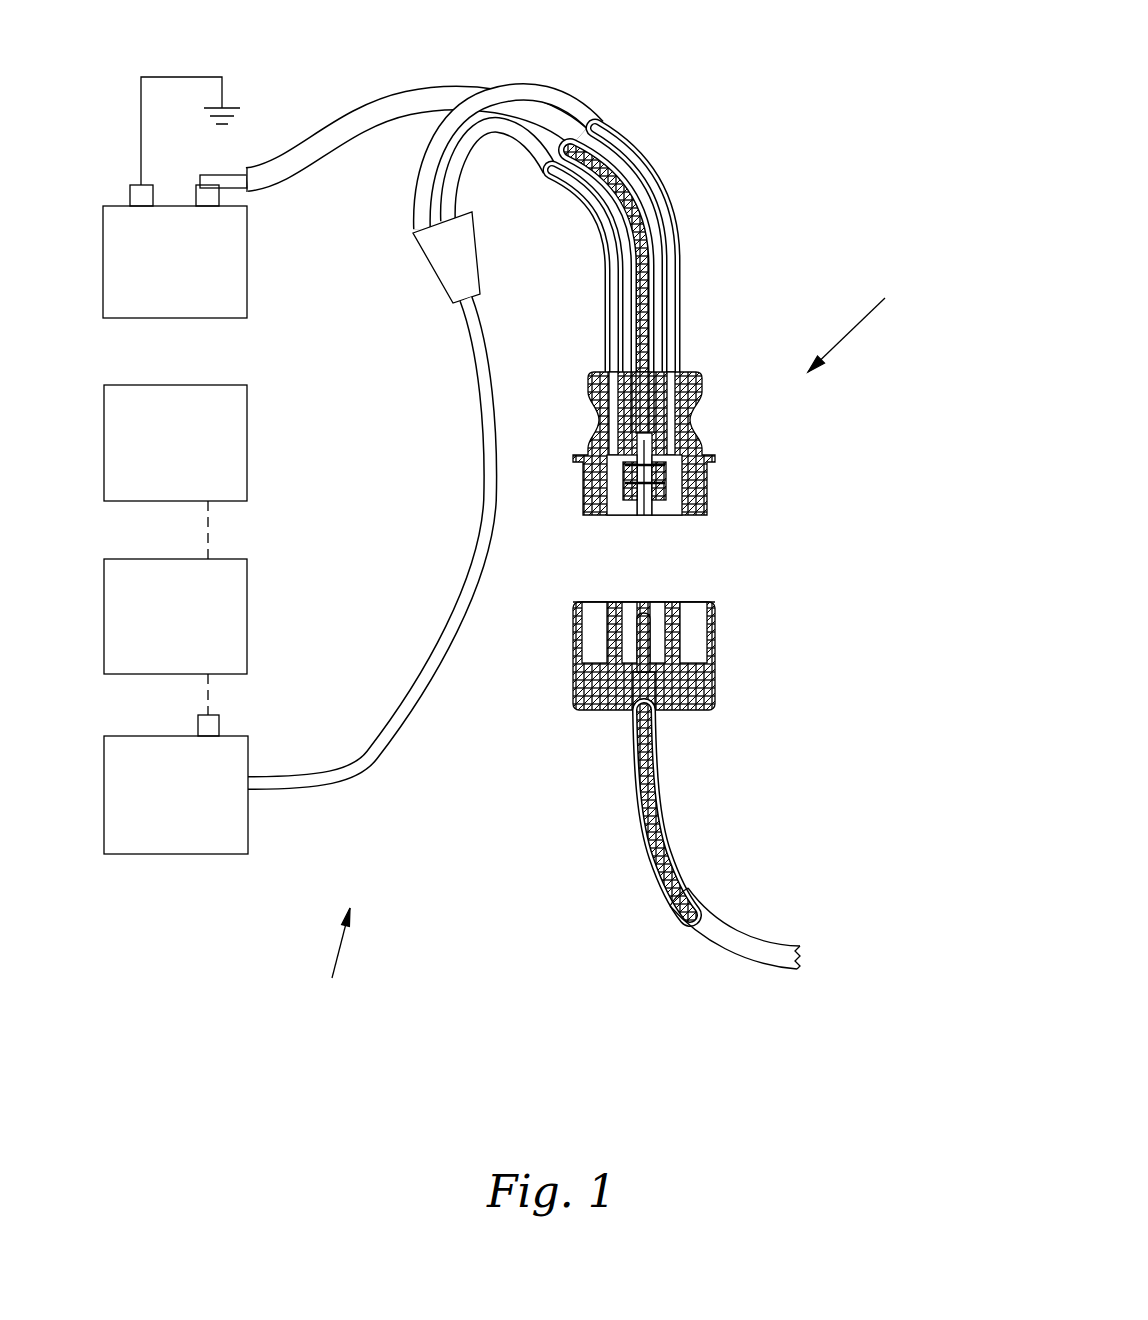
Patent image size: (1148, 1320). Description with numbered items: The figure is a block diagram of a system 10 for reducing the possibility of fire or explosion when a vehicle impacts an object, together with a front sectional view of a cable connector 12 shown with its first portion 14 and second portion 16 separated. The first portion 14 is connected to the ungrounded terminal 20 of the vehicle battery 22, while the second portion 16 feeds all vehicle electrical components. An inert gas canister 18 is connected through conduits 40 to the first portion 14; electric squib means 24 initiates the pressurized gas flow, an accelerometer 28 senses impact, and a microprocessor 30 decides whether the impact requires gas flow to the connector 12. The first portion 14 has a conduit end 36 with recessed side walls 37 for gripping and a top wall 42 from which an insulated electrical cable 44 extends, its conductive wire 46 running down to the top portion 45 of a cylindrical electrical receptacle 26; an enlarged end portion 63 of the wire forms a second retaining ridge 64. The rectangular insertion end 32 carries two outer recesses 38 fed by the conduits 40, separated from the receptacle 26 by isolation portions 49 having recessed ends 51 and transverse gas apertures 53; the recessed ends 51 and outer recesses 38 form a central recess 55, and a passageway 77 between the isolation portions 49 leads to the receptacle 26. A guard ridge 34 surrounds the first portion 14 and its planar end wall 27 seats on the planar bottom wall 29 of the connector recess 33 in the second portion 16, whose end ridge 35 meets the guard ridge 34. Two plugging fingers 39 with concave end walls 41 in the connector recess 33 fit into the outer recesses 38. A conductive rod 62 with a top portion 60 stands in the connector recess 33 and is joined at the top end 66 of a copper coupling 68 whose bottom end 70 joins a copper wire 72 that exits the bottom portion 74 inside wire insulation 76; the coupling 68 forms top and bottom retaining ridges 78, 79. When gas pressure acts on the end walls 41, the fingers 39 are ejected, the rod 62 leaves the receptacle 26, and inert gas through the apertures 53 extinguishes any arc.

The system 10 is at (332, 961).
The connector 12 is at (857, 328).
The first portion 14 is at (704, 382).
The second portion 16 is at (715, 672).
The inert gas canister 18 is at (188, 812).
The ungrounded terminal 20 is at (203, 182).
The vehicle battery 22 is at (228, 243).
The electric squib means 24 is at (220, 723).
The electrical receptacle 26 is at (665, 485).
The planar end wall 27 is at (697, 515).
The accelerometer 28 is at (232, 625).
The planar bottom wall 29 is at (595, 658).
The microprocessor 30 is at (228, 475).
The insertion end 32 is at (707, 512).
The connector recess 33 is at (590, 612).
The guard ridge 34 is at (715, 458).
The end ridge 35 is at (582, 604).
The conduit end 36 is at (693, 372).
The recessed side walls 37 is at (592, 424).
The outer recesses 38 is at (605, 515).
The plugging fingers 39 is at (622, 612).
The conduits 40 is at (550, 95).
The concave end walls 41 is at (612, 604).
The top wall 42 is at (593, 368).
The insulated electrical cable 44 is at (352, 120).
The top portion 45 is at (632, 480).
The electrically conductive wire 46 is at (620, 195).
The isolation portions 49 is at (626, 500).
The recessed ends 51 is at (660, 510).
The transverse gas apertures 53 is at (625, 478).
The central recess 55 is at (625, 512).
The top portion 60 is at (640, 613).
The rod 62 is at (573, 685).
The enlarged end portion 63 is at (657, 440).
The second retaining ridge 64 is at (640, 432).
The top end 66 is at (636, 738).
The copper coupling 68 is at (680, 712).
The bottom end 70 is at (640, 785).
The copper wire 72 is at (665, 828).
The bottom portion 74 is at (690, 712).
The wire insulation 76 is at (690, 895).
The passageway 77 is at (640, 510).
The top retaining ridge 78 is at (665, 690).
The bottom retaining ridge 79 is at (660, 715).